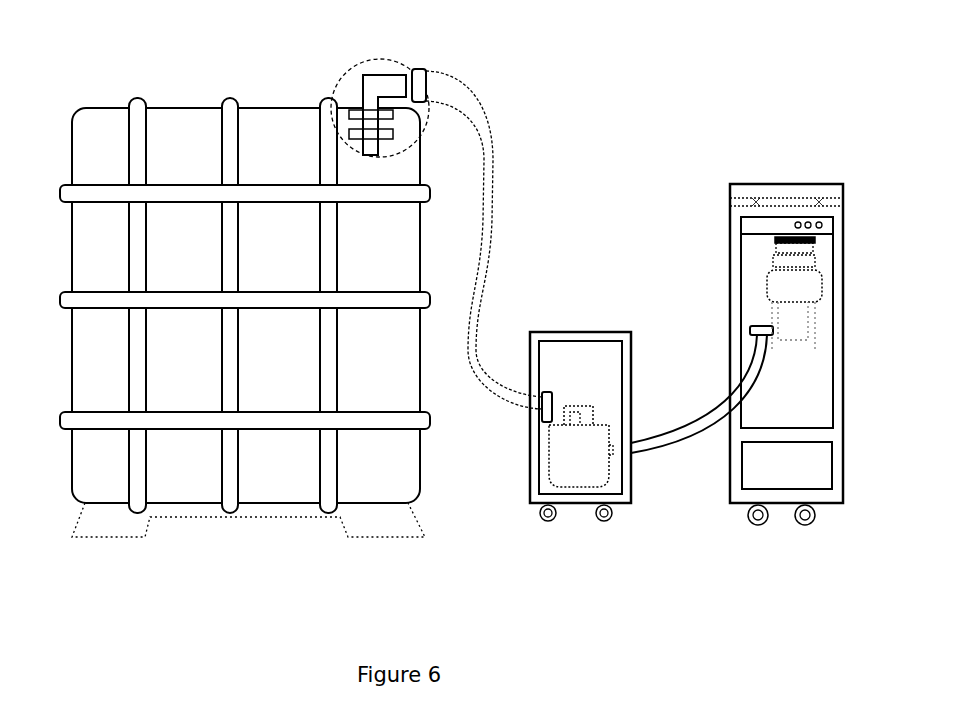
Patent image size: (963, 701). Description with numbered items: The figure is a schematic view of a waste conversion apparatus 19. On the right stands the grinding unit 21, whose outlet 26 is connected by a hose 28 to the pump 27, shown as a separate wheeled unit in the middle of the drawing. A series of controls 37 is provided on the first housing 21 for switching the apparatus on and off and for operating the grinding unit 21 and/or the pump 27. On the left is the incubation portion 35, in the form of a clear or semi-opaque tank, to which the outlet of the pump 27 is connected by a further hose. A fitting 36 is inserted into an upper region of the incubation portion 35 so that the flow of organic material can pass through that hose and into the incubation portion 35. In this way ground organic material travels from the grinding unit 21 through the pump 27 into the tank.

The waste conversion apparatus 19 is at (547, 91).
The grinding unit 21 is at (812, 303).
The outlet 26 is at (783, 321).
The pump 27 is at (573, 476).
The hose 28 is at (783, 385).
The incubation portion 35 is at (82, 147).
The fitting 36 is at (331, 82).
The controls 37 is at (803, 217).